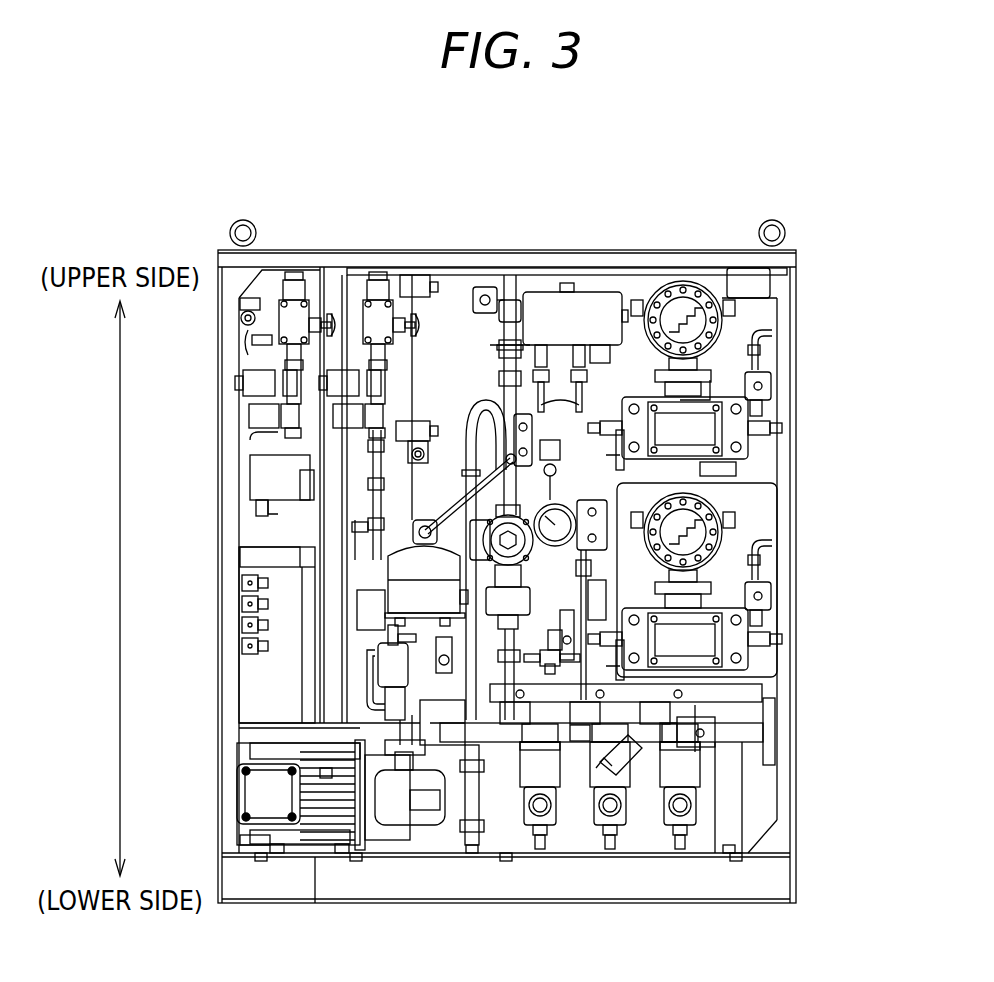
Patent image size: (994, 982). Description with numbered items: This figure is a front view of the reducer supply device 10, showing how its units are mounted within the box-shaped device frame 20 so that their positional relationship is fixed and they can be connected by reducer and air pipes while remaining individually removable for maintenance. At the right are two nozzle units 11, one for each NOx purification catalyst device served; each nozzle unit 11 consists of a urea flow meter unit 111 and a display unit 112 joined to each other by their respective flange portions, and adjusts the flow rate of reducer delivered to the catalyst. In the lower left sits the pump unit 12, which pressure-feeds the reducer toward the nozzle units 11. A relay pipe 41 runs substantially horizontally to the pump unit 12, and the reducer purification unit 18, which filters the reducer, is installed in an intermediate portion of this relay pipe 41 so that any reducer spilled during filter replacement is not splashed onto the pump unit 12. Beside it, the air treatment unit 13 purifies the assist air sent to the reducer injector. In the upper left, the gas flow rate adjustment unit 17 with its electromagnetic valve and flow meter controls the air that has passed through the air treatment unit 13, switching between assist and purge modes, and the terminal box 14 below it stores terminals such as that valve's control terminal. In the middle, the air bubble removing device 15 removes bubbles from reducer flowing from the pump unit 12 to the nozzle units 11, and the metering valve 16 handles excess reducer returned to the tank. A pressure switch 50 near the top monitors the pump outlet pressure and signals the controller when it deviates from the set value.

The reducer supply device 10 is at (269, 131).
The nozzle unit 11 is at (863, 290).
The urea flow meter unit 111 is at (682, 425).
The display unit 112 is at (683, 320).
The pump unit 12 is at (272, 798).
The air treatment unit 13 is at (690, 818).
The terminal box 14 is at (272, 678).
The air bubble removing device 15 is at (420, 572).
The metering valve 16 is at (487, 520).
The gas flow rate adjustment unit 17 is at (307, 373).
The reducer purification unit 18 is at (625, 755).
The device frame 20 is at (468, 262).
The relay pipe 41 is at (542, 730).
The pressure switch 50 is at (590, 312).